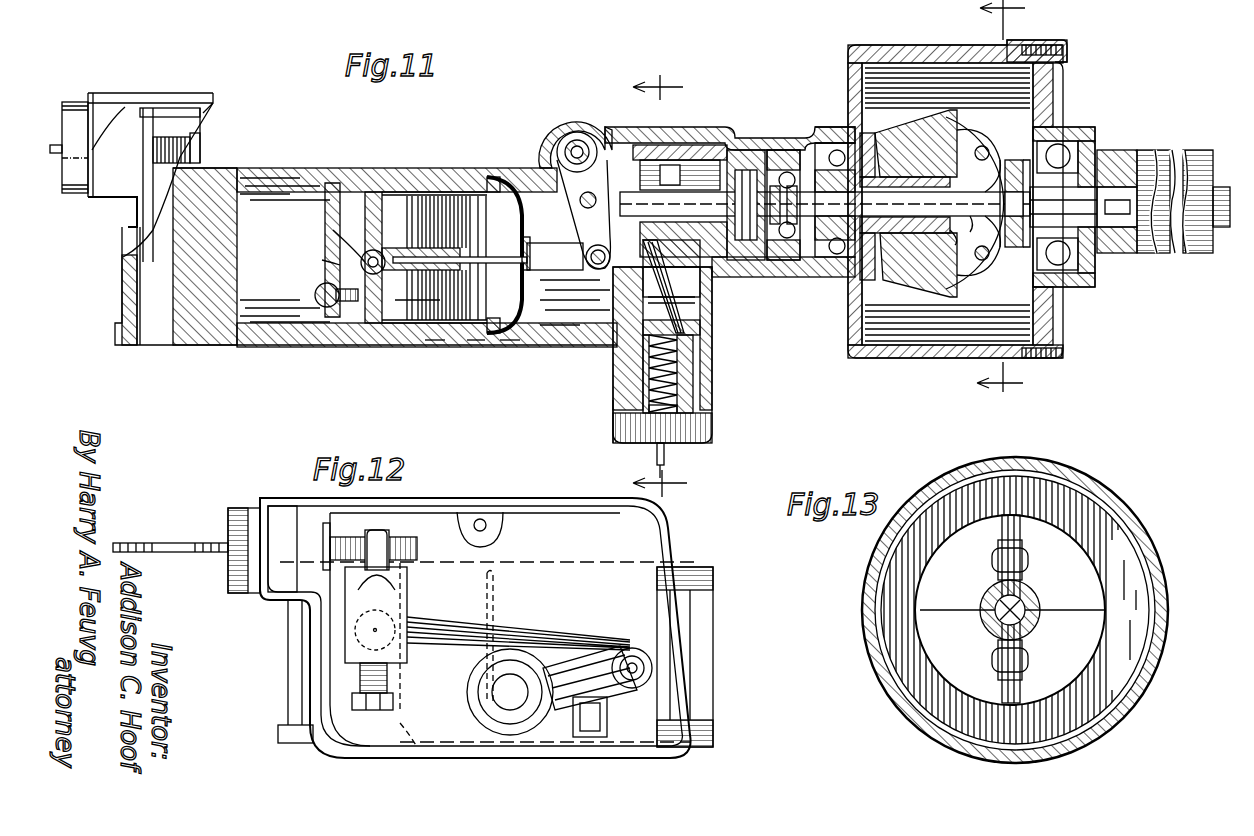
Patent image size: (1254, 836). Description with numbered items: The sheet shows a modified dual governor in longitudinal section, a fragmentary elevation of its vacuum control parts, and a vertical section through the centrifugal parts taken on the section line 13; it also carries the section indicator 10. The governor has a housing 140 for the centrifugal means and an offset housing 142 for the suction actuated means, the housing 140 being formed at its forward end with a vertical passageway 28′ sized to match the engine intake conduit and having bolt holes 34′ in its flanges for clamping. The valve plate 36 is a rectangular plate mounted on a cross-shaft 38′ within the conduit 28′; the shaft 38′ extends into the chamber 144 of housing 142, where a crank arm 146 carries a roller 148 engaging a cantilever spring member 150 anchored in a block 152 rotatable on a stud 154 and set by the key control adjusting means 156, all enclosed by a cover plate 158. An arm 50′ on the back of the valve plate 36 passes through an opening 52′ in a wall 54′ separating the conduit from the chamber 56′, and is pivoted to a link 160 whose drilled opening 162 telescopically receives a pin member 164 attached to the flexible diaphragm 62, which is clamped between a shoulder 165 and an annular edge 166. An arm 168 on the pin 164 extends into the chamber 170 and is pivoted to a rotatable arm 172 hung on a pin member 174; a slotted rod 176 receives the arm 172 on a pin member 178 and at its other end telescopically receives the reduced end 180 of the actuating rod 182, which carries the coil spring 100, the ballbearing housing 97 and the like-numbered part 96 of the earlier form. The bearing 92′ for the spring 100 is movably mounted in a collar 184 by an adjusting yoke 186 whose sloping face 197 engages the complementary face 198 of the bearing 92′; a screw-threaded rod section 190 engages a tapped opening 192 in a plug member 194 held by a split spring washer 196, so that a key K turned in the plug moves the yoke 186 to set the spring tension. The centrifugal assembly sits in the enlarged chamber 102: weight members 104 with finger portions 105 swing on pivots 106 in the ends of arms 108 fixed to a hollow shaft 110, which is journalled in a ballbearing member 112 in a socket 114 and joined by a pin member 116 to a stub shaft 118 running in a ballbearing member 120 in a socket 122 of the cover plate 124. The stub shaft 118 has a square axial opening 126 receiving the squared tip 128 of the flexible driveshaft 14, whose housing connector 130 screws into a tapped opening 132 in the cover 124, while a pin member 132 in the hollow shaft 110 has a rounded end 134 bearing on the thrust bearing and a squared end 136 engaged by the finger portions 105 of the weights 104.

In FIG. 11, the section line 10 is at (658, 78).
In FIG. 12, the section line 10 is at (660, 492).
In FIG. 11, the section line 13— 13 is at (1001, 206).
In FIG. 11, the flexible shaft 14 is at (1223, 237).
In FIG. 11, the vertical passageway 28′ is at (240, 183).
In FIG. 12, the vertical passageway 28′ is at (417, 747).
In FIG. 11, the bolt holes 34′ is at (155, 340).
In FIG. 11, the valve plate 36 is at (325, 265).
In FIG. 12, the valve plate 36 is at (497, 583).
In FIG. 11, the cross-shaft 38′ is at (316, 294).
In FIG. 12, the cross-shaft 38′ is at (513, 703).
In FIG. 11, the arm 50′ is at (330, 250).
In FIG. 11, the opening 52′ is at (353, 227).
In FIG. 11, the wall 54′ is at (360, 313).
In FIG. 11, the chamber 56′ is at (403, 313).
In FIG. 11, the flexible diaphragm 62 is at (523, 237).
In FIG. 11, the bearing 92′ is at (713, 300).
In FIG. 11, the coupling member 96 is at (770, 260).
In FIG. 11, the ballbearing housing 97 is at (790, 260).
In FIG. 11, the spring 100 is at (780, 150).
In FIG. 11, the enlarged chamber 102 is at (943, 350).
In FIG. 13, the enlarged chamber 102 is at (1108, 493).
In FIG. 11, the weight members 104 is at (907, 120).
In FIG. 13, the weight members 104 is at (930, 627).
In FIG. 11, the finger portions 105 is at (990, 160).
In FIG. 11, the pivots 106 is at (970, 150).
In FIG. 13, the pivots 106 is at (993, 557).
In FIG. 11, the arms 108 is at (983, 137).
In FIG. 13, the arms 108 is at (1030, 560).
In FIG. 11, the hollow shaft 110 is at (853, 260).
In FIG. 11, the ballbearing member 112 is at (830, 277).
In FIG. 11, the socket 114 is at (813, 133).
In FIG. 11, the pin member 116 is at (975, 232).
In FIG. 11, the stub shaft 118 is at (1097, 143).
In FIG. 11, the ballbearing member 120 is at (1060, 300).
In FIG. 11, the socket 122 is at (1063, 127).
In FIG. 11, the cover plate 124 is at (1058, 352).
In FIG. 11, the square axial opening 126 is at (1080, 280).
In FIG. 11, the squared tip 128 is at (1100, 260).
In FIG. 11, the flexible shaft housing connector 130 is at (1117, 247).
In FIG. 11, the pin member 132 is at (915, 277).
In FIG. 13, the pin member 132 is at (993, 620).
In FIG. 11, the rounded end 134 is at (825, 224).
In FIG. 11, the squared end 136 is at (955, 245).
In FIG. 11, the housing 140 is at (693, 127).
In FIG. 12, the housing 140 is at (710, 673).
In FIG. 12, the offset housing 142 is at (560, 498).
In FIG. 12, the chamber 144 is at (610, 552).
In FIG. 12, the crank arm 146 is at (560, 697).
In FIG. 12, the roller 148 is at (633, 687).
In FIG. 12, the cantilever spring member 150 is at (547, 637).
In FIG. 12, the block 152 is at (363, 632).
In FIG. 12, the stud 154 is at (363, 647).
In FIG. 11, the key control adjusting means 156 is at (177, 160).
In FIG. 12, the key control adjusting means 156 is at (357, 540).
In FIG. 11, the cover plate 158 is at (117, 101).
In FIG. 11, the link 160 is at (393, 192).
In FIG. 11, the axial drilled opening 162 is at (440, 200).
In FIG. 11, the elongated pin member 164 is at (497, 180).
In FIG. 11, the shoulder 165 is at (473, 340).
In FIG. 11, the annular edge 166 is at (507, 340).
In FIG. 11, the arm 168 is at (563, 270).
In FIG. 11, the chamber 170 is at (560, 327).
In FIG. 11, the rotatable arm 172 is at (553, 180).
In FIG. 11, the pin member 174 is at (570, 147).
In FIG. 11, the rod 176 is at (610, 257).
In FIG. 11, the pin member 178 is at (585, 235).
In FIG. 11, the reduced end 180 is at (623, 145).
In FIG. 11, the actuating rod 182 is at (745, 150).
In FIG. 11, the collar 184 is at (657, 150).
In FIG. 11, the adjusting yoke 186 is at (712, 370).
In FIG. 11, the screw-threaded rod section 190 is at (700, 415).
In FIG. 11, the tapped opening 192 is at (613, 415).
In FIG. 11, the plug member 194 is at (705, 437).
In FIG. 11, the split spring washer 196 is at (710, 380).
In FIG. 11, the sloping face 197 is at (712, 320).
In FIG. 11, the complementary face 198 is at (700, 345).
In FIG. 11, the key K is at (670, 457).
In FIG. 12, the key K is at (172, 533).